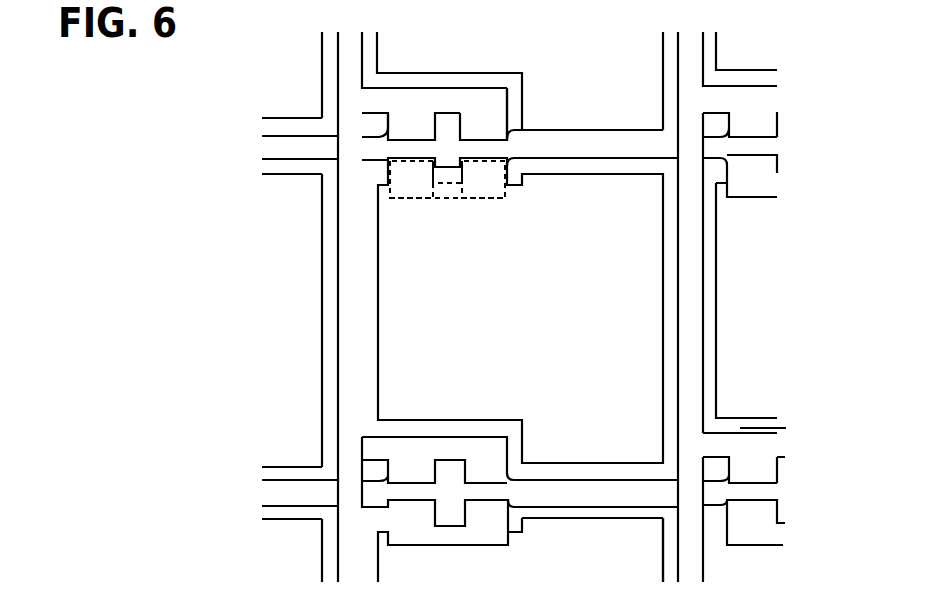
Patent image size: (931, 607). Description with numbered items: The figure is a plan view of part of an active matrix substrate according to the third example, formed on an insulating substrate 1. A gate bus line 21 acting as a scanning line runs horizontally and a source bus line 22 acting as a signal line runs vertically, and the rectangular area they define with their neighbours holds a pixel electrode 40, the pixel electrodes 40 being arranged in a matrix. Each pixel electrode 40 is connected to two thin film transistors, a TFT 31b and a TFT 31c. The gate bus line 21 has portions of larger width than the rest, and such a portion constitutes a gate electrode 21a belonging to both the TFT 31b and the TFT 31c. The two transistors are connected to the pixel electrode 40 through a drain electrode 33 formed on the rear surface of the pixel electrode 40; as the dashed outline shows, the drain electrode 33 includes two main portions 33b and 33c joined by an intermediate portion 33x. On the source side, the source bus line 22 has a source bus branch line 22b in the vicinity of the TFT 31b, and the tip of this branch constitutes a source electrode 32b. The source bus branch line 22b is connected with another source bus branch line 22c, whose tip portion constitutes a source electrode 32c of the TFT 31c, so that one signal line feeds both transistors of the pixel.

The insulating substrate 1 is at (770, 428).
The gate bus line 21 is at (622, 150).
The gate electrode 21a is at (510, 146).
The source bus line 22 is at (345, 72).
The source bus branch line 22b is at (428, 103).
The source bus branch line 22c is at (483, 110).
The TFT 31b is at (412, 148).
The TFT 31c is at (480, 148).
The source electrode 32b is at (407, 128).
The source electrode 32c is at (498, 124).
The drain electrode 33 is at (512, 192).
The main portion 33b is at (405, 180).
The intermediate portion 33x is at (449, 188).
The main portion 33c is at (523, 176).
The pixel electrode 40 is at (592, 360).